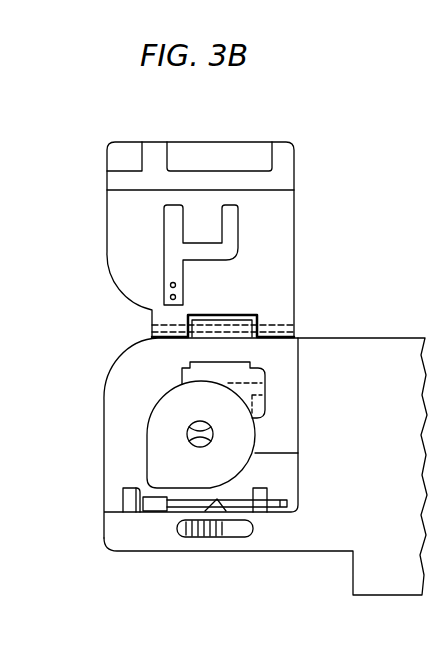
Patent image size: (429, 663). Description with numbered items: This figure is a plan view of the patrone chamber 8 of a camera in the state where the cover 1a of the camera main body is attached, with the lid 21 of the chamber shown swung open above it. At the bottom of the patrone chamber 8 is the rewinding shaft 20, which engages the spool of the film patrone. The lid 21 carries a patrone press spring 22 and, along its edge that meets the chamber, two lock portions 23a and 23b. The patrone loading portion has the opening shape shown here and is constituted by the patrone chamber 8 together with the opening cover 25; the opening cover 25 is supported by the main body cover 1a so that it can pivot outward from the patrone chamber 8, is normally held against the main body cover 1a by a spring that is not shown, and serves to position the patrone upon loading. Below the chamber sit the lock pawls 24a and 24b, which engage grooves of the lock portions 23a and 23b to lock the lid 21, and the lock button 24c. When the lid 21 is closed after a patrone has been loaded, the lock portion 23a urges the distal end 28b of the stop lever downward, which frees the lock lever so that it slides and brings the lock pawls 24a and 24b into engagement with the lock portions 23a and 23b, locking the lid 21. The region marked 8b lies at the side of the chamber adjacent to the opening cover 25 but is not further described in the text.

The cover of the camera main body 1a is at (278, 363).
The patrone chamber 8 is at (160, 437).
The engaging portion of rotary member 8b is at (247, 390).
The rewinding shaft 20 is at (214, 436).
The lid 21 is at (128, 268).
The patrone press spring 22 is at (172, 222).
The lock portion 23a is at (155, 152).
The lock portion 23b is at (284, 156).
The lock pawl 24a is at (133, 493).
The lock pawl 24b is at (268, 493).
The lock button 24c is at (208, 536).
The opening cover 25 is at (182, 376).
The distal end of the stop lever 28b is at (155, 503).